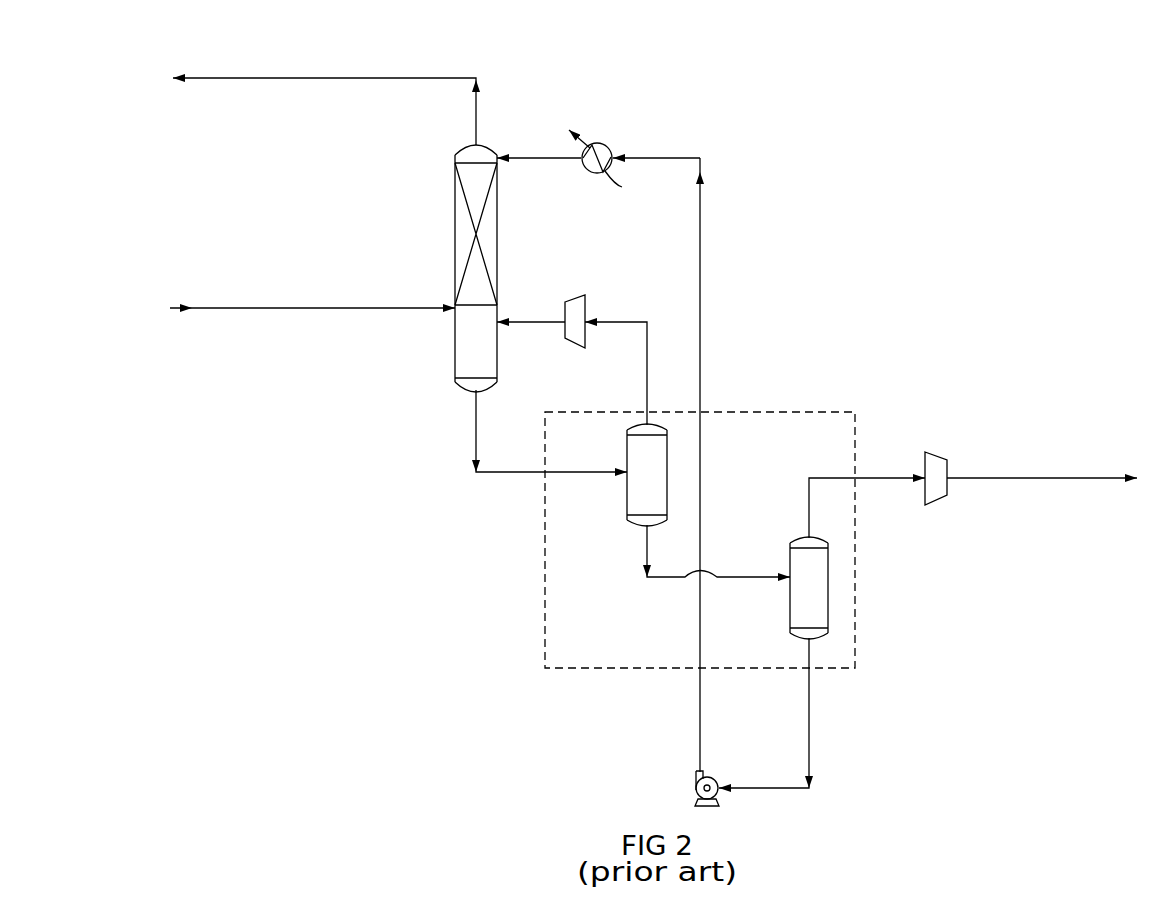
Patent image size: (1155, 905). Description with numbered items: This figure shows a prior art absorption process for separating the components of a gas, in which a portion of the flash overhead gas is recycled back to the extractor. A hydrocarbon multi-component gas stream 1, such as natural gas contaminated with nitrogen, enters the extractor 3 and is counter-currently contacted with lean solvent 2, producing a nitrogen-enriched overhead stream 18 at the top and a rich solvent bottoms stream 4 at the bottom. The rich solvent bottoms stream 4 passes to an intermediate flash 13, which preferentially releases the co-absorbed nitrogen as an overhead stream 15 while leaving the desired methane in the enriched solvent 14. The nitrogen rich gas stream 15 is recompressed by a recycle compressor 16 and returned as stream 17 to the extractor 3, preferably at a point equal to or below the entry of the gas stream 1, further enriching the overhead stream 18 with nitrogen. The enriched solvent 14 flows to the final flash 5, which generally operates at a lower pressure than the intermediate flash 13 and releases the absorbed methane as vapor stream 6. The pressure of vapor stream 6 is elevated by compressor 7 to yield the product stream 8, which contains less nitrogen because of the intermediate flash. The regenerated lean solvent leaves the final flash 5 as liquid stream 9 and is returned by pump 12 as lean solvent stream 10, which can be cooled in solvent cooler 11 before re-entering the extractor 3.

The hydrocarbon multi-component gas stream 1 is at (267, 310).
The lean solvent 2 is at (518, 157).
The extractor 3 is at (455, 218).
The rich solvent bottoms stream 4 is at (502, 474).
The final flash 5 is at (790, 600).
The vapor stream 6 is at (870, 478).
The compressor 7 is at (938, 455).
The product stream 8 is at (993, 480).
The liquid stream 9 is at (773, 790).
The lean solvent stream 10 is at (707, 265).
The solvent cooler 11 is at (600, 175).
The pump 12 is at (693, 777).
The intermediate flash 13 is at (630, 527).
The enriched solvent 14 is at (677, 578).
The overhead stream 15 is at (610, 322).
The recycle compressor 16 is at (577, 343).
The expanded vapor line to column 17 is at (518, 322).
The overhead stream 18 is at (268, 78).